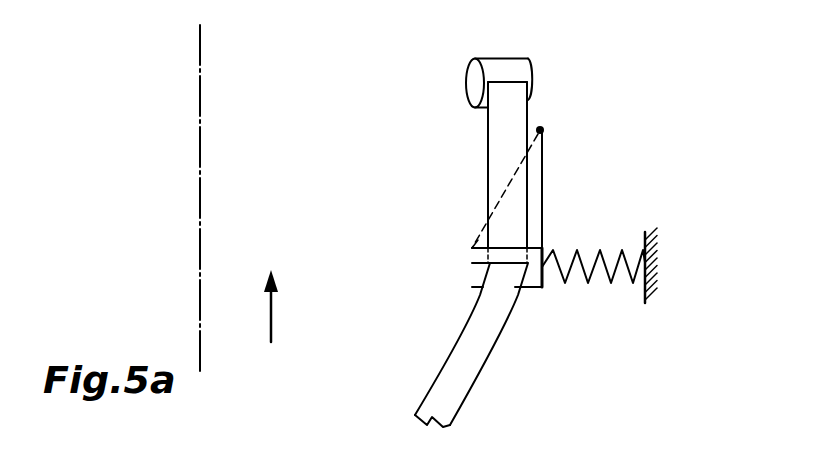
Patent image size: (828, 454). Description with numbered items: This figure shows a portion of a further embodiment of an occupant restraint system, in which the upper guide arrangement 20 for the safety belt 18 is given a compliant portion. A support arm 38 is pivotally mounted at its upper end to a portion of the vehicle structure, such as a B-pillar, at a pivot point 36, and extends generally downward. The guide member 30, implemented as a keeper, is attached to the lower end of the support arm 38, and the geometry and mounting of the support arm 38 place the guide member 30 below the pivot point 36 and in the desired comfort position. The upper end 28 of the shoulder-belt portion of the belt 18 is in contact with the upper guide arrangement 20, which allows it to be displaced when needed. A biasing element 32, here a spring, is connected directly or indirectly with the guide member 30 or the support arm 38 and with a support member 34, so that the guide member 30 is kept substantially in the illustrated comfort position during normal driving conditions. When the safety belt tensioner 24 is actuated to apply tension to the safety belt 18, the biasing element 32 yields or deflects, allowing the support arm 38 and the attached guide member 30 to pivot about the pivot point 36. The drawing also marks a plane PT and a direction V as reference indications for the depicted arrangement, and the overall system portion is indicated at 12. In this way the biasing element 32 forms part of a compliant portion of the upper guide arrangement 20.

The pedal assembly 12 is at (350, 144).
The safety belt 18 is at (465, 377).
The upper guide arrangement 20 is at (565, 228).
The safety belt tensioner 24 is at (472, 80).
The upper end of the shoulder-belt portion 28 is at (522, 328).
The guide member 30 is at (478, 262).
The biasing element 32 is at (580, 277).
The support member 34 is at (655, 272).
The pivot point 36 is at (544, 132).
The support arm 38 is at (478, 243).
The transverse plane PT is at (200, 60).
The vertical direction V is at (270, 320).